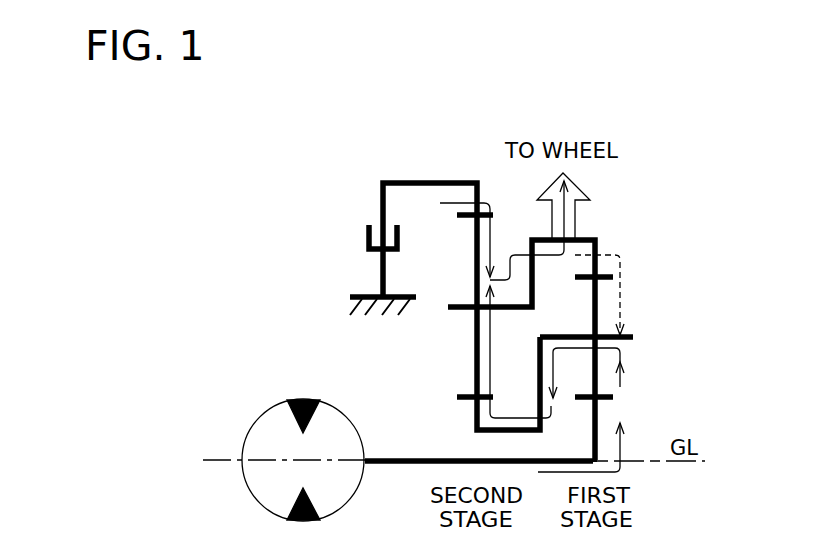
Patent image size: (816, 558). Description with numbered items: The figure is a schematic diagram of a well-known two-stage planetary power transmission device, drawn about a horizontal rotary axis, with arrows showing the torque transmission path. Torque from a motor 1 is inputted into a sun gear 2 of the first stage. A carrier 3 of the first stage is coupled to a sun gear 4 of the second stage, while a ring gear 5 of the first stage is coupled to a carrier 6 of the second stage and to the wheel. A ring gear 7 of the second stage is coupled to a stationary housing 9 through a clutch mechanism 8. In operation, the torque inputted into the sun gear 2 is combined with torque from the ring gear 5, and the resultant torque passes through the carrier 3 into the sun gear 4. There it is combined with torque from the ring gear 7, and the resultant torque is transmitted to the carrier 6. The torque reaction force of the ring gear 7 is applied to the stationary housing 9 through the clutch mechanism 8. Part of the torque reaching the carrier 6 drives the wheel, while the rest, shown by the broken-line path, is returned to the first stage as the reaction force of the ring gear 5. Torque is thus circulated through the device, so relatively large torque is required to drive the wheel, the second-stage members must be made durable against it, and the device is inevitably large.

The motor 1 is at (268, 410).
The sun gear of a first stage 2 is at (597, 418).
The carrier of the first stage 3 is at (628, 335).
The sun gear of a second stage 4 is at (474, 421).
The ring gear of the first stage 5 is at (589, 238).
The carrier of the second stage 6 is at (476, 263).
The ring gear of the second stage 7 is at (417, 181).
The clutch mechanism 8 is at (366, 229).
The stationary housing 9 is at (356, 296).